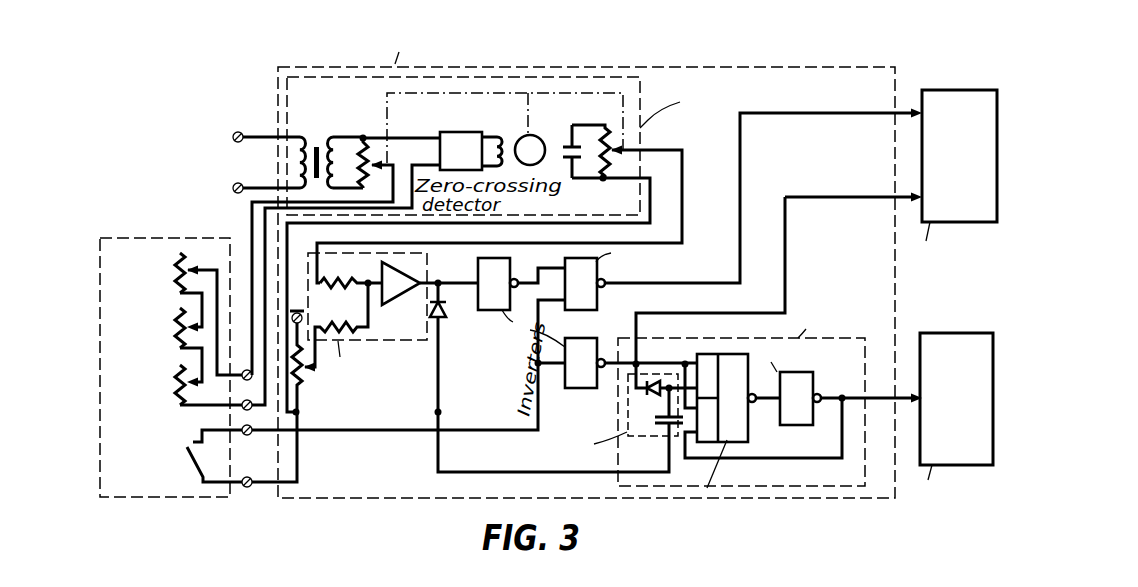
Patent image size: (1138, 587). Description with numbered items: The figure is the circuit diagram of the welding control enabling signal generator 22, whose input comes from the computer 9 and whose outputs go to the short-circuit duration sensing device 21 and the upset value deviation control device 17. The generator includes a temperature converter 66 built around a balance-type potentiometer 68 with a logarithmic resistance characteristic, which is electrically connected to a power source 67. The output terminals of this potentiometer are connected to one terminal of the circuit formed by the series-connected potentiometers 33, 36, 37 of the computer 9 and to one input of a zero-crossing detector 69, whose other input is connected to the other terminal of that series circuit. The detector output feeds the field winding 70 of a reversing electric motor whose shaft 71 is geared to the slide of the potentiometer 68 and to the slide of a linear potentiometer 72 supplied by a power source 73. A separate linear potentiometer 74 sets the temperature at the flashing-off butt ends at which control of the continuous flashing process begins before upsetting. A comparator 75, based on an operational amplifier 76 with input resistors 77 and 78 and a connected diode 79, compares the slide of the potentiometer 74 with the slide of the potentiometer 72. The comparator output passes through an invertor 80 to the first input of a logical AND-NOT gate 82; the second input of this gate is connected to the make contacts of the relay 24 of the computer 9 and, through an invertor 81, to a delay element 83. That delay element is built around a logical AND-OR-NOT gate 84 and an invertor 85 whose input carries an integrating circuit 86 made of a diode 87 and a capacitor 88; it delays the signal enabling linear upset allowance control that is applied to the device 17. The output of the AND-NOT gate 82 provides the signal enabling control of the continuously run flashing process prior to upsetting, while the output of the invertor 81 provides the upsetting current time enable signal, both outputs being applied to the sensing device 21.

The computer 9 is at (130, 234).
The upset value deviation control device 17 is at (1013, 424).
The short-circuit duration sensing device 21 is at (987, 186).
The welding control enabling signal generator 22 is at (903, 76).
The relay 24 is at (189, 457).
The slide-wire potentiometer 33 is at (174, 384).
The slide-wire potentiometer 36 is at (174, 272).
The slide-wire potentiometer 37 is at (174, 329).
The temperature converter 66 is at (645, 110).
The power source 67 is at (320, 142).
The balance-type potentiometer 68 is at (323, 255).
The zero-crossing detector 69 is at (461, 151).
The field winding 70 is at (504, 134).
The shaft 71 is at (541, 140).
The linear potentiometer 72 is at (605, 179).
The power source 73 is at (562, 158).
The linear potentiometer 74 is at (305, 380).
The comparator 75 is at (438, 258).
The operational amplifier 76 is at (396, 293).
The resistor 77 is at (342, 281).
The resistor 78 is at (347, 324).
The diode 79 is at (447, 306).
The invertor 80 is at (521, 284).
The invertor 81 is at (631, 363).
The logical AND-NOT gate 82 is at (743, 210).
The delay element 83 is at (869, 345).
The logical AND-OR-NOT gate 84 is at (748, 432).
The invertor 85 is at (800, 426).
The integrating circuit 86 is at (618, 388).
The diode 87 is at (652, 395).
The capacitor 88 is at (657, 433).